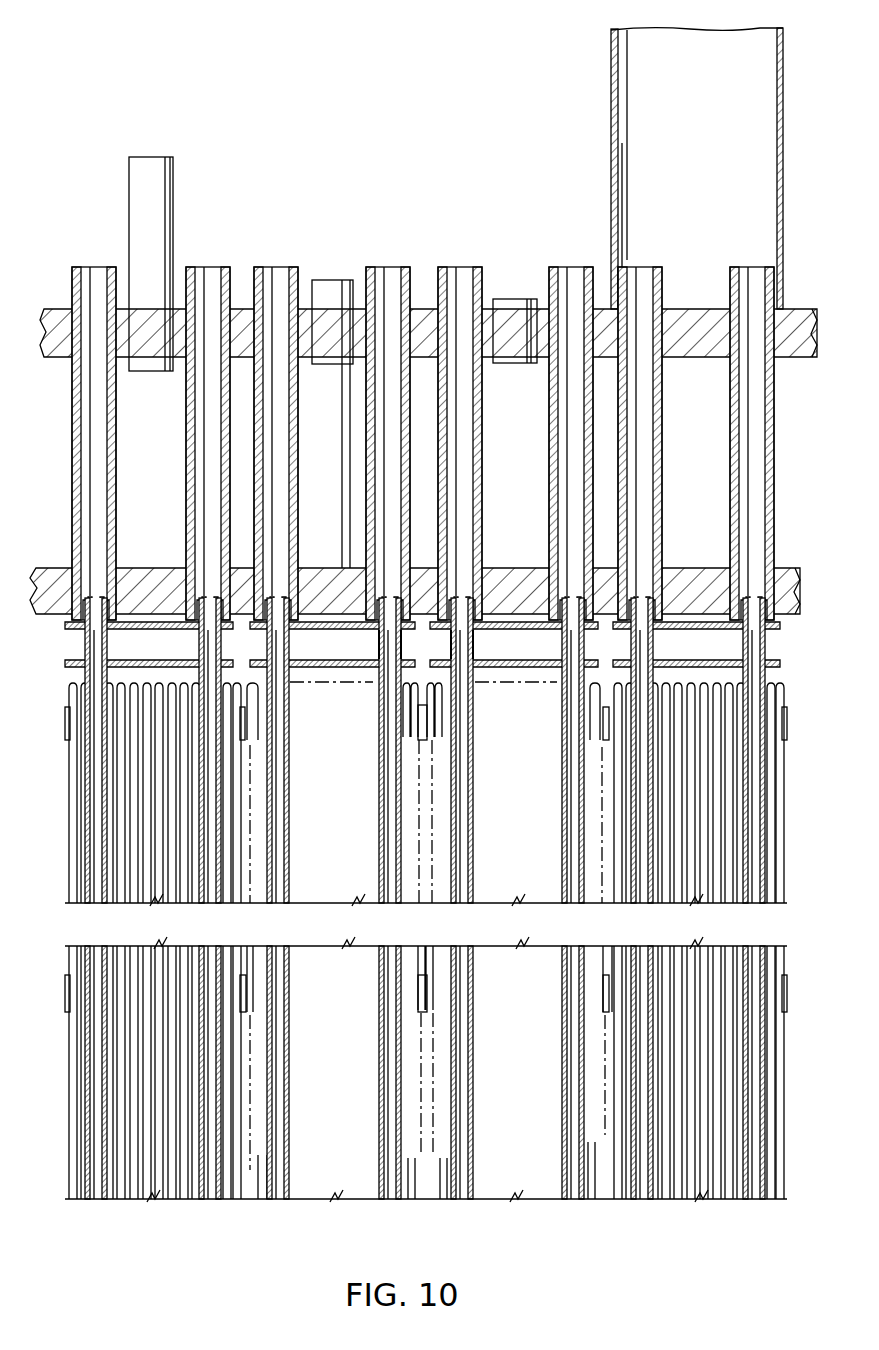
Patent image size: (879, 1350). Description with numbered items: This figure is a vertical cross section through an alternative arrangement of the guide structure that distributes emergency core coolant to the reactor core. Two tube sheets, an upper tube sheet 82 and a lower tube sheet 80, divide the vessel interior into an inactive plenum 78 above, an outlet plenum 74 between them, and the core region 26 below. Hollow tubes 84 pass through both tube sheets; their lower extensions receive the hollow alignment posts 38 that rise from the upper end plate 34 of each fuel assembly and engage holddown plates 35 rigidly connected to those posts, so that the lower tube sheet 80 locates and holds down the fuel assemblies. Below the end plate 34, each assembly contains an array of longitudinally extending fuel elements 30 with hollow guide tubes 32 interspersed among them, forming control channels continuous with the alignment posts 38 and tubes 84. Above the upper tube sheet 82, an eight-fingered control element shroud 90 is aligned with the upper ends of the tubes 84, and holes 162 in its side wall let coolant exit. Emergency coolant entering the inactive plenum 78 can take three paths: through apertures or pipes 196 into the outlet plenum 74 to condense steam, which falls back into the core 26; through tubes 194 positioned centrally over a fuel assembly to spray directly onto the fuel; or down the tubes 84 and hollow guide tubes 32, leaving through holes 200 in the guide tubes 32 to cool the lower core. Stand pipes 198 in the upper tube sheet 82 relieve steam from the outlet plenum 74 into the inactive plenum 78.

The core region 26 is at (338, 863).
The fuel elements 30 is at (728, 760).
The guide tubes 32 is at (560, 752).
The upper end plate 34 is at (777, 663).
The holddown plates 35 is at (781, 628).
The alignment posts 38 is at (450, 651).
The outlet plenum region 74 is at (530, 451).
The inactive plenum region 78 is at (358, 195).
The lower tube sheet 80 is at (49, 568).
The upper tube sheet 82 is at (240, 312).
The tubes 84 is at (185, 468).
The control element shroud 90 is at (691, 168).
The holes 162 is at (611, 76).
The tubes 194 is at (334, 286).
The apertures or pipes 196 is at (508, 304).
The stand pipes 198 is at (174, 184).
The holes 200 is at (563, 956).